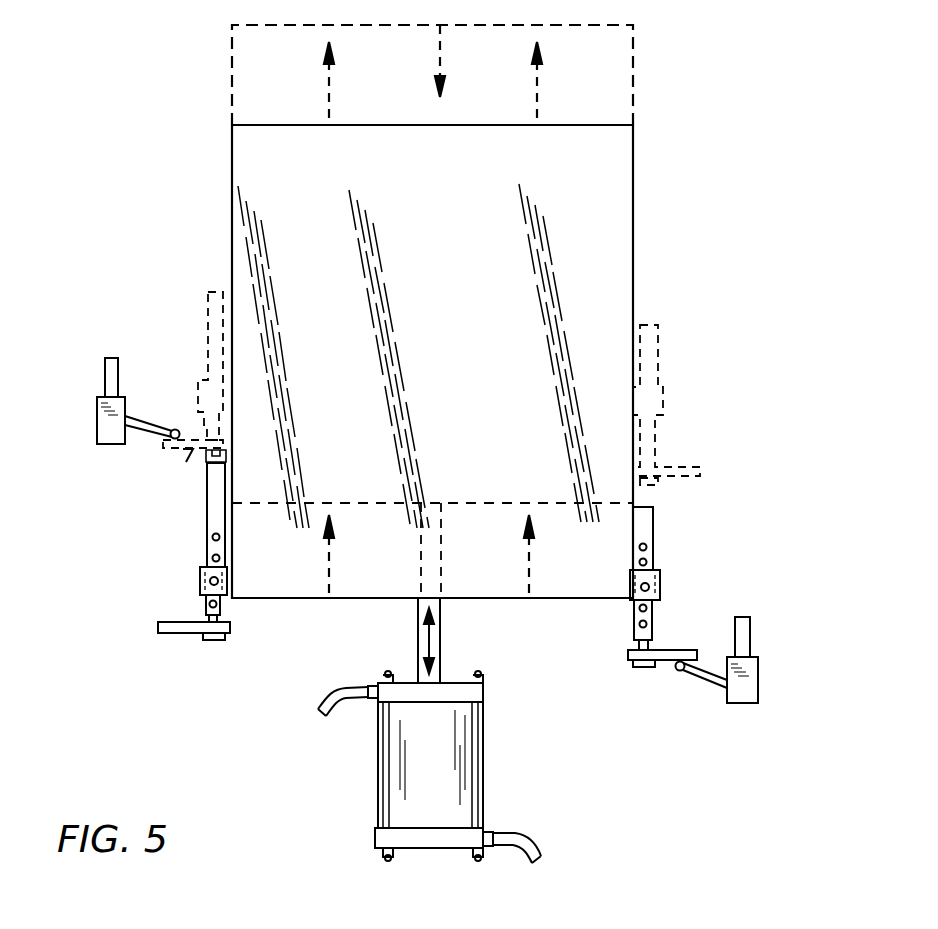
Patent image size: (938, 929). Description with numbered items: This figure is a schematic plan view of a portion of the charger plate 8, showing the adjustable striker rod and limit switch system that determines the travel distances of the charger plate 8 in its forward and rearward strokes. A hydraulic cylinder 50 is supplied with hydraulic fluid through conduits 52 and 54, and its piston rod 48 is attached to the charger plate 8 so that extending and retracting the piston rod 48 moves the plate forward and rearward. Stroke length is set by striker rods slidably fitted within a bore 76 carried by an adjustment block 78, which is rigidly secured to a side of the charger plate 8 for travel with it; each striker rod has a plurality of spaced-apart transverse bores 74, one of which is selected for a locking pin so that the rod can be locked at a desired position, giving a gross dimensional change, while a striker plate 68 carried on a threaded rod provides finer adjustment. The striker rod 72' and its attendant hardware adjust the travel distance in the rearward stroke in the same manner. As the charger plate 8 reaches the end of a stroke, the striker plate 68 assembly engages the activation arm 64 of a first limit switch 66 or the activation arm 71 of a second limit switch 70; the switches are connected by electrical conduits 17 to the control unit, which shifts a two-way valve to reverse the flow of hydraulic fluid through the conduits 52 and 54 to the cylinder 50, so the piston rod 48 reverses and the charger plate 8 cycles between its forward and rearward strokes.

The charger plate 8 is at (633, 265).
The electrical conduits 17 is at (105, 385).
The piston rod 48 is at (440, 650).
The hydraulic cylinder 50 is at (455, 772).
The conduit 52 is at (334, 690).
The conduit 54 is at (532, 838).
The activation arm 64 is at (140, 420).
The first limit switch 66 is at (97, 432).
The striker plate 68 is at (185, 462).
The second limit switch 70 is at (760, 683).
The activation arm 71 is at (710, 682).
The striker rod 72' is at (679, 526).
The transverse bores 74 is at (655, 547).
The bore 76 is at (207, 514).
The adjustment block 78 is at (200, 587).